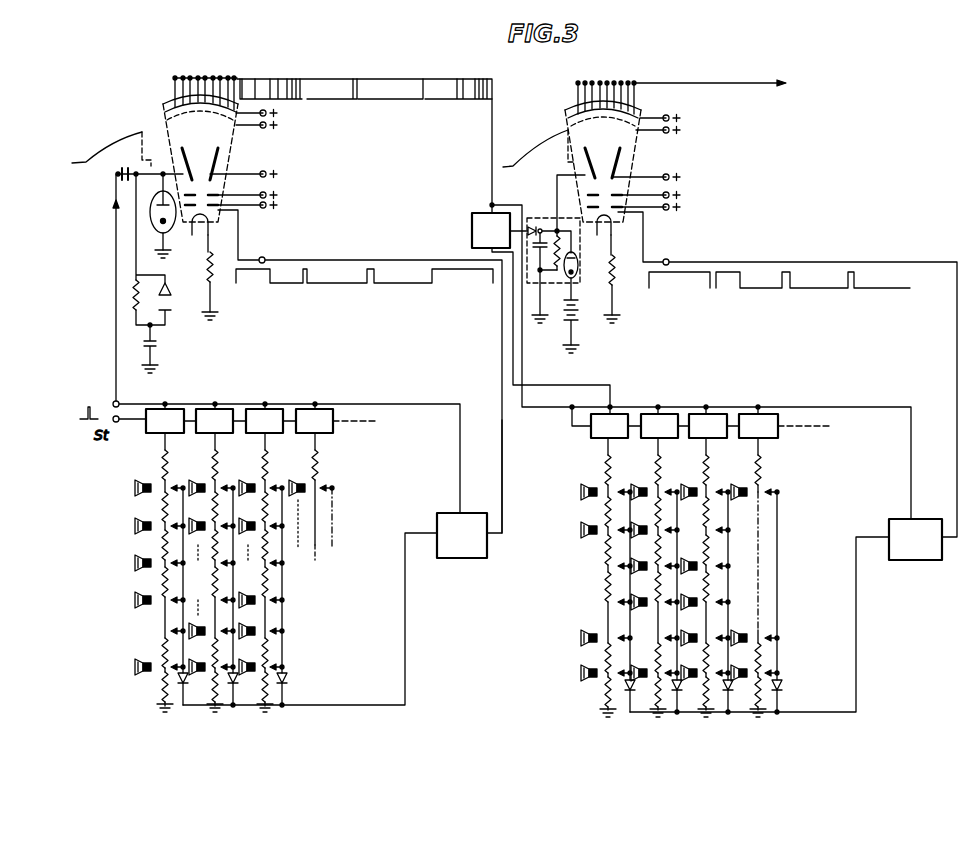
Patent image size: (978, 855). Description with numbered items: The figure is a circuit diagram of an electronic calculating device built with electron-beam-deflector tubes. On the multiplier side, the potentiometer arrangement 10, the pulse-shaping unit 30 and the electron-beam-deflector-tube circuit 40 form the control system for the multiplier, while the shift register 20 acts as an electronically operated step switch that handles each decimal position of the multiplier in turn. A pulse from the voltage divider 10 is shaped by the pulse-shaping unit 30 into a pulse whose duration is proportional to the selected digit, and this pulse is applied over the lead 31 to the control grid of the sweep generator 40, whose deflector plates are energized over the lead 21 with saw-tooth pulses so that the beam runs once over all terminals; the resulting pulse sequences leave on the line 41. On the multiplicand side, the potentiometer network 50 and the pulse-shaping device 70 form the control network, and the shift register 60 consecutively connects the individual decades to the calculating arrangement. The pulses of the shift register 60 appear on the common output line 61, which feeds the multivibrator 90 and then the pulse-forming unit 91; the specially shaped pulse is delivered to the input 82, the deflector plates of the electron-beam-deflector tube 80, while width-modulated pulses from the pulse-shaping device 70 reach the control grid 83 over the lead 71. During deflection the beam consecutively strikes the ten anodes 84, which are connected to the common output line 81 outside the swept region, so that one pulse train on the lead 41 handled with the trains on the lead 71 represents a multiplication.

The potentiometer arrangement 10 is at (120, 573).
The shift register 20 is at (156, 433).
The lead 21 is at (350, 404).
The pulse-shaping unit 30 is at (457, 558).
The lead 31 is at (502, 478).
The electron-beam-deflector-tube circuit 40 is at (284, 147).
The line 41 is at (253, 90).
The potentiometer network 50 is at (588, 588).
The shift register 60 is at (600, 438).
The common output line 61 is at (736, 407).
The pulse-shaping device 70 is at (917, 560).
The lead 71 is at (957, 490).
The electron-beam-deflector tube 80 is at (695, 144).
The common output line 81 is at (728, 83).
The input 82 is at (566, 168).
The control grid 83 is at (630, 230).
The anodes 84 is at (580, 113).
The multivibrator 90 is at (472, 234).
The pulse-forming unit 91 is at (574, 284).